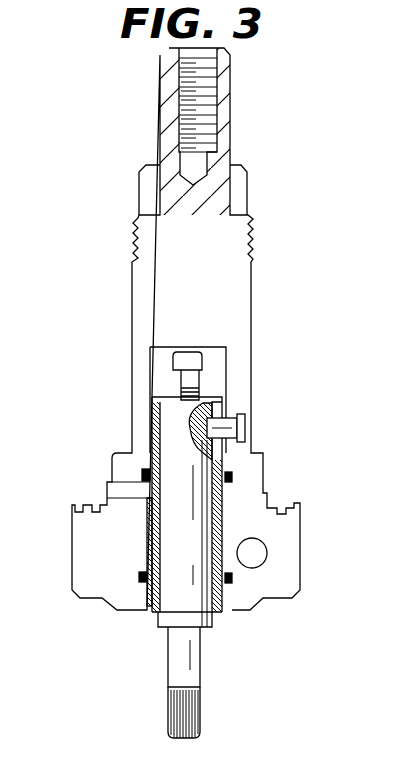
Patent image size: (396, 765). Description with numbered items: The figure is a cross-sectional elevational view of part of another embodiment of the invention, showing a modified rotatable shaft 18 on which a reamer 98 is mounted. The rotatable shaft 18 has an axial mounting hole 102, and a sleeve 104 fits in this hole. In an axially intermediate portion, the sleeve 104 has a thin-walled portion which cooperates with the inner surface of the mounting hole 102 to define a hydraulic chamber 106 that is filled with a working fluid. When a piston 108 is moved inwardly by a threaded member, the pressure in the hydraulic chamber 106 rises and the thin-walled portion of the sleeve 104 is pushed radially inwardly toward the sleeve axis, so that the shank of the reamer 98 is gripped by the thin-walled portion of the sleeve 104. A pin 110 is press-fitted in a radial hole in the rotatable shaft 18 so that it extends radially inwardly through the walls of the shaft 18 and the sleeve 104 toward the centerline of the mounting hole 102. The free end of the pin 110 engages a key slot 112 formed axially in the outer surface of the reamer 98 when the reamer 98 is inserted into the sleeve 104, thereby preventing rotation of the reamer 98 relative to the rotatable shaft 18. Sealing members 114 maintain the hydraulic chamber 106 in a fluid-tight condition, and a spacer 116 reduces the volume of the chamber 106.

The rotatable shaft 18 is at (272, 295).
The reamer 98 is at (190, 678).
The axial mounting hole 102 is at (200, 620).
The sleeve 104 is at (220, 462).
The hydraulic chamber 106 is at (148, 496).
The piston 108 is at (257, 553).
The pin 110 is at (246, 428).
The key slot 112 is at (200, 399).
The sealing members 114 is at (142, 476).
The spacer 116 is at (147, 548).